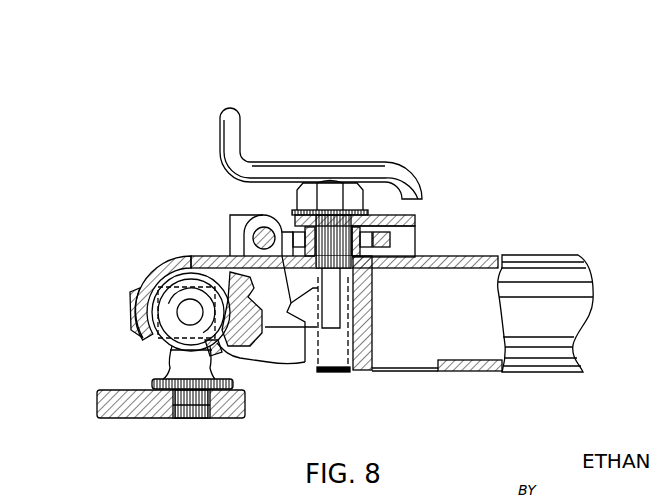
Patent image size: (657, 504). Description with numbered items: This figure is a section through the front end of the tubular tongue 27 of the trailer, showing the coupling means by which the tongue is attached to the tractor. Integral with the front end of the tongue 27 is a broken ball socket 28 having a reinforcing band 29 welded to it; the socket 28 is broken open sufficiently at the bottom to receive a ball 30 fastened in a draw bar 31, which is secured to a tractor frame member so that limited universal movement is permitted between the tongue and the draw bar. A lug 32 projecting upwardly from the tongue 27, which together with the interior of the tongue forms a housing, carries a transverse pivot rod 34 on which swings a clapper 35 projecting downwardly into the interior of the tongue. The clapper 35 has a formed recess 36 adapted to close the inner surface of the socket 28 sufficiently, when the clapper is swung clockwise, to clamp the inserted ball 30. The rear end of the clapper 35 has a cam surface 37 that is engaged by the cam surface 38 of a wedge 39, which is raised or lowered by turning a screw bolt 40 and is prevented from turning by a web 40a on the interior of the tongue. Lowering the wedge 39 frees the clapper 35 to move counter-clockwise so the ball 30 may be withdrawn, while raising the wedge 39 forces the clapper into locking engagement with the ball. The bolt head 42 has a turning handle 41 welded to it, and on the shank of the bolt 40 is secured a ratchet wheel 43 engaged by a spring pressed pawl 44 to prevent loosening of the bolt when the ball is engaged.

The tubular tongue 27 is at (492, 255).
The broken ball socket 28 is at (147, 273).
The reinforcing band 29 is at (131, 297).
The ball 30 is at (183, 330).
The draw bar 31 is at (104, 404).
The lug 32 is at (237, 229).
The transverse pivot rod 34 is at (262, 229).
The clapper 35 is at (280, 318).
The formed recess 36 is at (253, 303).
The cam surface 37 is at (300, 309).
The cam surface 38 is at (309, 310).
The wedge 39 is at (310, 310).
The screw bolt 40 is at (332, 306).
The web 40a is at (362, 341).
The turning handle 41 is at (279, 172).
The bolt head 42 is at (335, 193).
The ratchet wheel 43 is at (370, 220).
The spring pressed pawl 44 is at (390, 242).